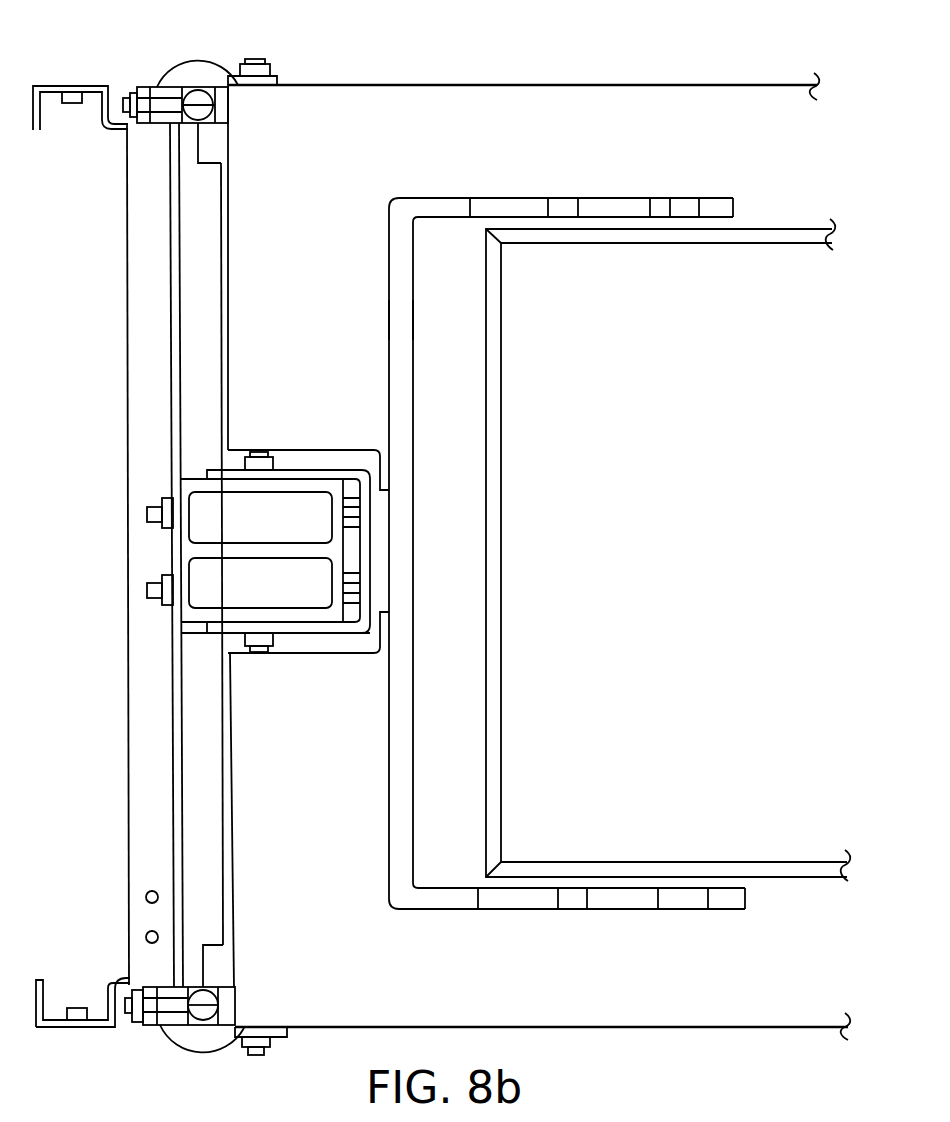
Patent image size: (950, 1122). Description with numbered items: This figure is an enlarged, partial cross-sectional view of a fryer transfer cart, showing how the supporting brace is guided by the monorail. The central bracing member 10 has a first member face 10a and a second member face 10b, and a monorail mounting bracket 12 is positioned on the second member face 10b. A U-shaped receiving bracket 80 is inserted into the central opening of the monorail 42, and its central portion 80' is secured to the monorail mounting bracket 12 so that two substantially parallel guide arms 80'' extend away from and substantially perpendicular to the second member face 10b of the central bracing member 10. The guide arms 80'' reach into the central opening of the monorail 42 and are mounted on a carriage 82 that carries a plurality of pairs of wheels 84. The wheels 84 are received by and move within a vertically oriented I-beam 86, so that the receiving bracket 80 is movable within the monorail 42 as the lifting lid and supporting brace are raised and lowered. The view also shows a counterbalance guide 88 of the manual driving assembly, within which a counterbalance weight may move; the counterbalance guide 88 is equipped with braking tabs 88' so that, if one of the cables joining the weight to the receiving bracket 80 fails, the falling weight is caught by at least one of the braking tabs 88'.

The central bracing member 10 is at (372, 222).
The first member face 10a is at (410, 320).
The second member face 10b is at (387, 323).
The monorail mounting bracket 12 is at (380, 530).
The monorail 42 is at (303, 658).
The U-shaped receiving bracket 80 is at (282, 675).
The central portion 80' is at (326, 550).
The guide arms 80'' is at (333, 435).
The carriage 82 is at (280, 490).
The wheels 84 is at (220, 508).
The I-beam 86 is at (195, 548).
The counterbalance guide 88 is at (79, 516).
The braking tabs 88' is at (79, 556).